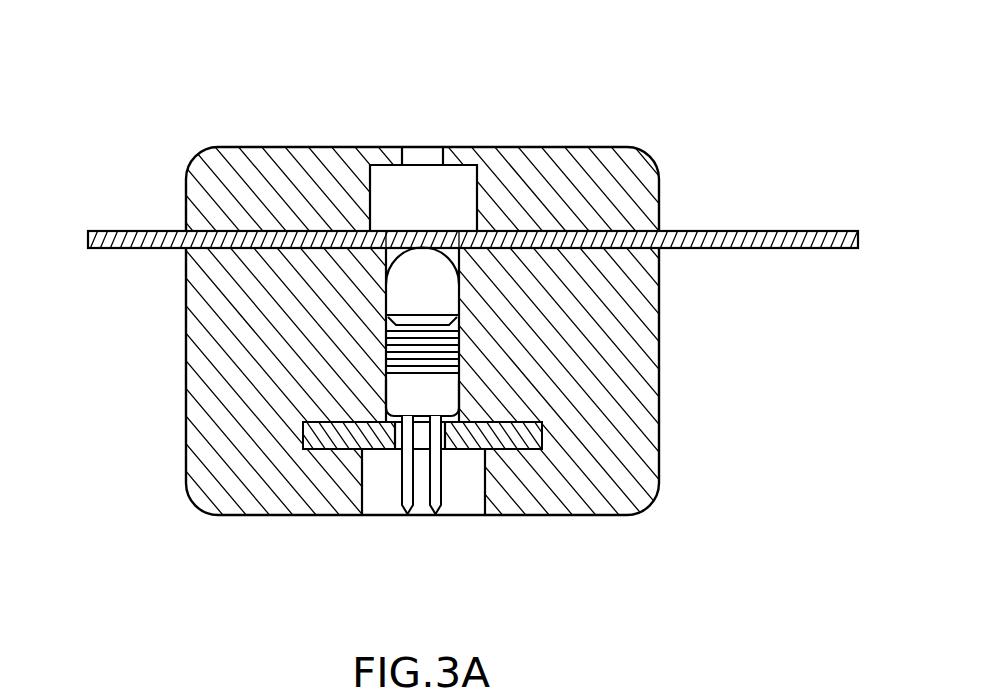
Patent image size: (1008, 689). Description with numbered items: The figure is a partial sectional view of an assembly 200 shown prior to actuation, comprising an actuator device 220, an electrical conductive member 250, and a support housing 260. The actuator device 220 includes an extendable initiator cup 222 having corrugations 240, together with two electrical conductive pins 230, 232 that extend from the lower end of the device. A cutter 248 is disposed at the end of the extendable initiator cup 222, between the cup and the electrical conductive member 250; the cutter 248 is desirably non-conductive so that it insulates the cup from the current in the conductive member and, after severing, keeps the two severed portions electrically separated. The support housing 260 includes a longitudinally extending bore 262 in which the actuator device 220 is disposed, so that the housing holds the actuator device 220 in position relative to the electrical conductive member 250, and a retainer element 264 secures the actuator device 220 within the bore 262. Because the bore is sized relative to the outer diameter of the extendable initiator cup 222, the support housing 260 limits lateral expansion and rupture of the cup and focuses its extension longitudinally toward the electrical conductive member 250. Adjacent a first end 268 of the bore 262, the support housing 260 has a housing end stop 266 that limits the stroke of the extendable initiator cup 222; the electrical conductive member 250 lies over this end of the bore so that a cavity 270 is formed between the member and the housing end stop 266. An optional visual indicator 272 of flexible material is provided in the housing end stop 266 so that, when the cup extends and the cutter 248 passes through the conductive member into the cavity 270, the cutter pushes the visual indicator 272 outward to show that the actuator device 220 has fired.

The assembly 200 is at (502, 337).
The actuator device 220 is at (478, 386).
The extendable initiator cup 222 is at (385, 368).
The electrical conductive pin 230 is at (408, 517).
The electrical conductive pin 232 is at (437, 517).
The corrugations 240 is at (375, 350).
The cutter 248 is at (428, 284).
The electrical conductive member 250 is at (770, 231).
The support housing 260 is at (659, 333).
The longitudinally extending bore 262 is at (385, 325).
The retainer element 264 is at (470, 450).
The housing end stop 266 is at (377, 148).
The first end of the bore 268 is at (386, 246).
The cavity 270 is at (402, 188).
The visual indicator 272 is at (425, 153).